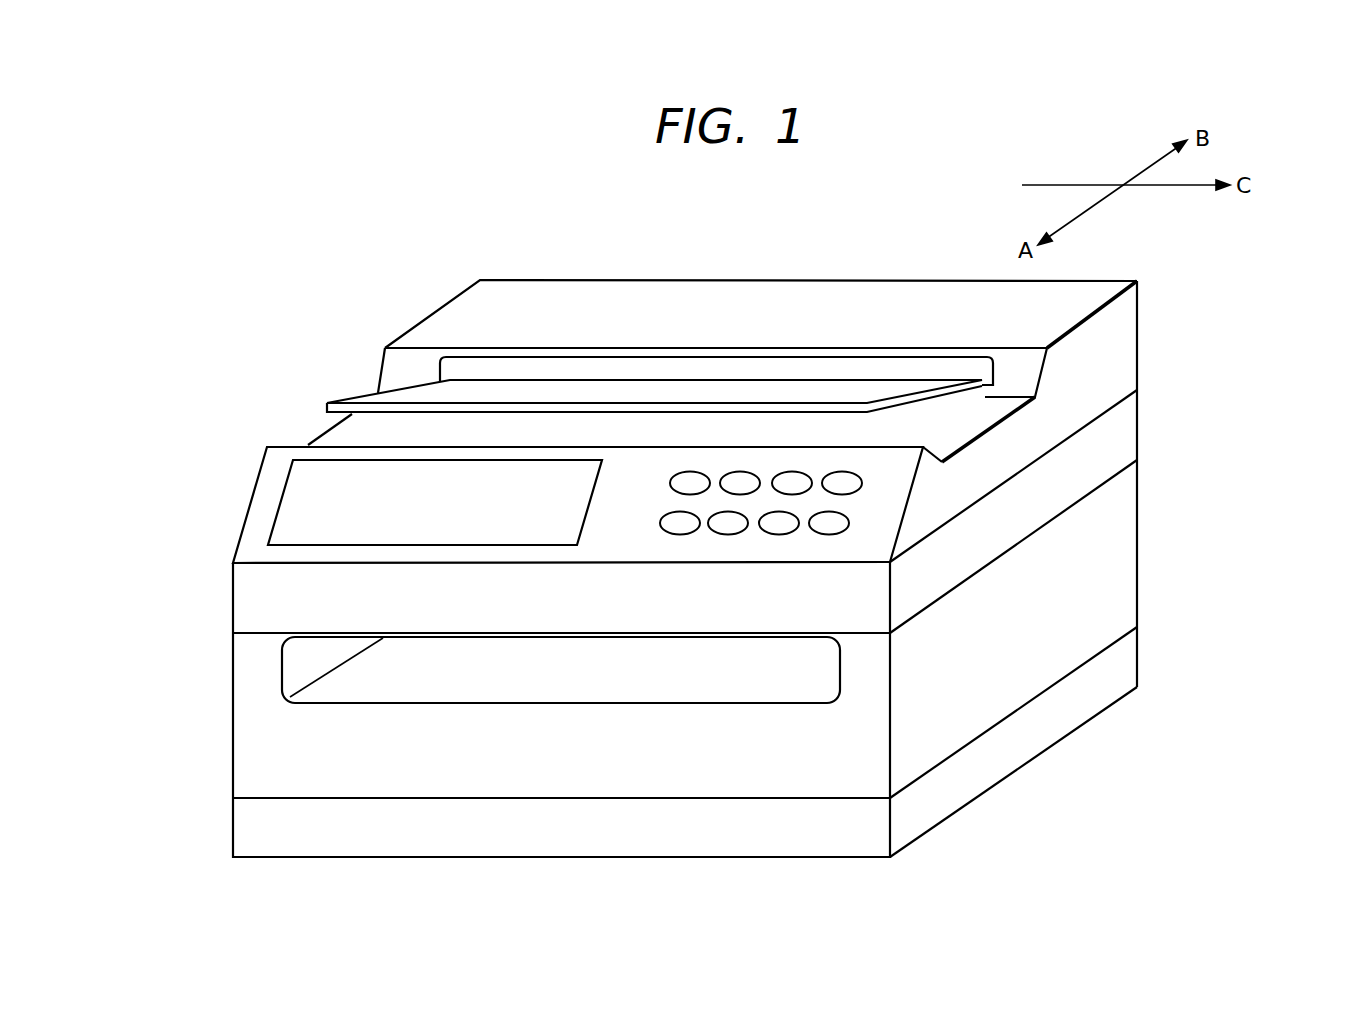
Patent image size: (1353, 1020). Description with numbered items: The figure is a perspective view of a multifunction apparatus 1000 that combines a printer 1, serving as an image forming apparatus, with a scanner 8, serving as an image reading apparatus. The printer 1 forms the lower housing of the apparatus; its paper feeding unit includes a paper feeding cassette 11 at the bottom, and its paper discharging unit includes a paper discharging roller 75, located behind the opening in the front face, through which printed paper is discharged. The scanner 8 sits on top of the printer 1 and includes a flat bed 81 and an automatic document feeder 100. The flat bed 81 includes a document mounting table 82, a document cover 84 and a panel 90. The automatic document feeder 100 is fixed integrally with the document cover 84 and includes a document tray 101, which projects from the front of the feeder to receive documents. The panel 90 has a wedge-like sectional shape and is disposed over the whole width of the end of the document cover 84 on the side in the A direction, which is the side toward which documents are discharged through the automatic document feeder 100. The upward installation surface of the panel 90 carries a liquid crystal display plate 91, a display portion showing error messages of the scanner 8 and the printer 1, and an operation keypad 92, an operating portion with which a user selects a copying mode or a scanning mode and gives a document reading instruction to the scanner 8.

The multifunction apparatus 1000 is at (1206, 325).
The printer 1 is at (1170, 589).
The scanner 8 is at (1170, 387).
The flat bed 81 is at (1060, 528).
The document mounting table 82 is at (1100, 452).
The document cover 84 is at (980, 478).
The paper feeding cassette 11 is at (848, 833).
The paper discharging roller 75 is at (808, 665).
The panel 90 is at (236, 508).
The liquid crystal display plate 91 is at (450, 517).
The operation keypad 92 is at (870, 470).
The automatic document feeder 100 is at (1164, 273).
The document tray 101 is at (400, 388).